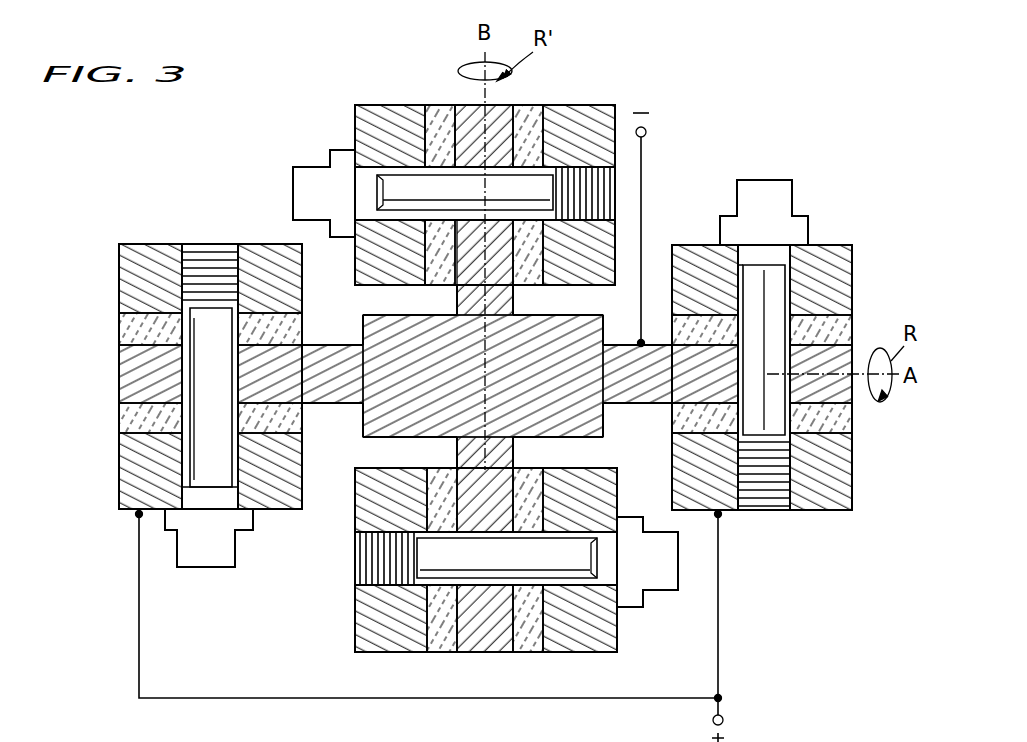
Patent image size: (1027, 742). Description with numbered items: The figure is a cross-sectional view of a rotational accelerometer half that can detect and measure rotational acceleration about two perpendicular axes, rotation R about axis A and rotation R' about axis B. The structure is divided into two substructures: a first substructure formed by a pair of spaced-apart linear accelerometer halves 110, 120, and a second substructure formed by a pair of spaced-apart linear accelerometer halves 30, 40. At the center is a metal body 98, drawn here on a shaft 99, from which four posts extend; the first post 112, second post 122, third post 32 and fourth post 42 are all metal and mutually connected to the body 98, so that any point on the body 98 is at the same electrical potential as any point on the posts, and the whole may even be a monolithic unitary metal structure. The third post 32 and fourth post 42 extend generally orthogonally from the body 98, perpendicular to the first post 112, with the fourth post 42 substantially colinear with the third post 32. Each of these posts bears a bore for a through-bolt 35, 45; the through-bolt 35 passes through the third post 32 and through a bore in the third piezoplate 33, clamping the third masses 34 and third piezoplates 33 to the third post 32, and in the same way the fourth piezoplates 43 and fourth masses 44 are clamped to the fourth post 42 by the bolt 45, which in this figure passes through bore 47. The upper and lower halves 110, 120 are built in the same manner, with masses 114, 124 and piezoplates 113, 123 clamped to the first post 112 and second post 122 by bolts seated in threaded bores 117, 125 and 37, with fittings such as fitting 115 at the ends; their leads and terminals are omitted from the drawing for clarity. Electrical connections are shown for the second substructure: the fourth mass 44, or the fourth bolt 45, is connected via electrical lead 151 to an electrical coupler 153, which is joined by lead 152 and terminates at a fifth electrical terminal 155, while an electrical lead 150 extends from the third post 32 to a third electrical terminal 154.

The linear accelerometer half 30 is at (853, 556).
The third post 32 is at (842, 353).
The third piezoplate 33 is at (848, 322).
The third mass 34 is at (838, 290).
The through-bolt 35 is at (778, 511).
The bore 37 is at (790, 292).
The linear accelerometer half 40 is at (193, 608).
The fourth post 42 is at (123, 378).
The fourth piezoplate 43 is at (122, 326).
The fourth mass 44 is at (145, 243).
The through-bolt 45 is at (206, 258).
The bore 47 is at (187, 368).
The body 98 is at (387, 335).
The shaft 99 is at (452, 385).
The linear accelerometer half 110 is at (322, 74).
The first post 112 is at (495, 108).
The insulating layer 113 is at (437, 105).
The mass 114 is at (388, 105).
The fitting 115 is at (293, 160).
The bore 117 is at (392, 167).
The linear accelerometer half 120 is at (632, 657).
The second post 122 is at (485, 635).
The insulating layer 123 is at (437, 625).
The mass 124 is at (368, 628).
The threaded bore portion 125 is at (368, 567).
The electrical lead 150 is at (645, 180).
The electrical lead 151 is at (268, 698).
The conductor 152 is at (720, 636).
The electrical coupler 153 is at (725, 697).
The third electrical terminal 154 is at (647, 130).
The fifth electrical terminal 155 is at (727, 720).